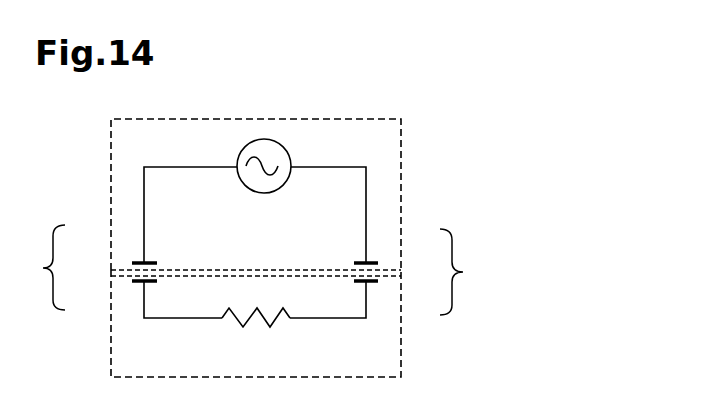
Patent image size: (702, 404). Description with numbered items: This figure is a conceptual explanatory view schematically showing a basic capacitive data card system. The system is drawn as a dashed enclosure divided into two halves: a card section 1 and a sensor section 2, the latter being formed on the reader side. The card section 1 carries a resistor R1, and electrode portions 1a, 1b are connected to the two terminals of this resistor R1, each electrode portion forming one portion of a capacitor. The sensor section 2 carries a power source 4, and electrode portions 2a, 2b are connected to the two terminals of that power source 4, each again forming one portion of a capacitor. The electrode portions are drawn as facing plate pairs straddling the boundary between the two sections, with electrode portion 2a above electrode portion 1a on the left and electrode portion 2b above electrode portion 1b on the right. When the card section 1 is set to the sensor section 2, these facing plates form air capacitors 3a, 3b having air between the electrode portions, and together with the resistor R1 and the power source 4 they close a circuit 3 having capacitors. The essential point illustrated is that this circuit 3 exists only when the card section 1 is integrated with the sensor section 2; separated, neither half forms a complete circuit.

The card section 1 is at (404, 343).
The sensor section 2 is at (404, 160).
The circuit 3 is at (364, 142).
The power source 4 is at (286, 146).
The electrode portion 1a is at (137, 282).
The electrode portion 1b is at (373, 282).
The electrode portion 2a is at (137, 262).
The electrode portion 2b is at (373, 262).
The air capacitor 3a is at (80, 267).
The air capacitor 3b is at (425, 272).
The resistor R1 is at (256, 331).